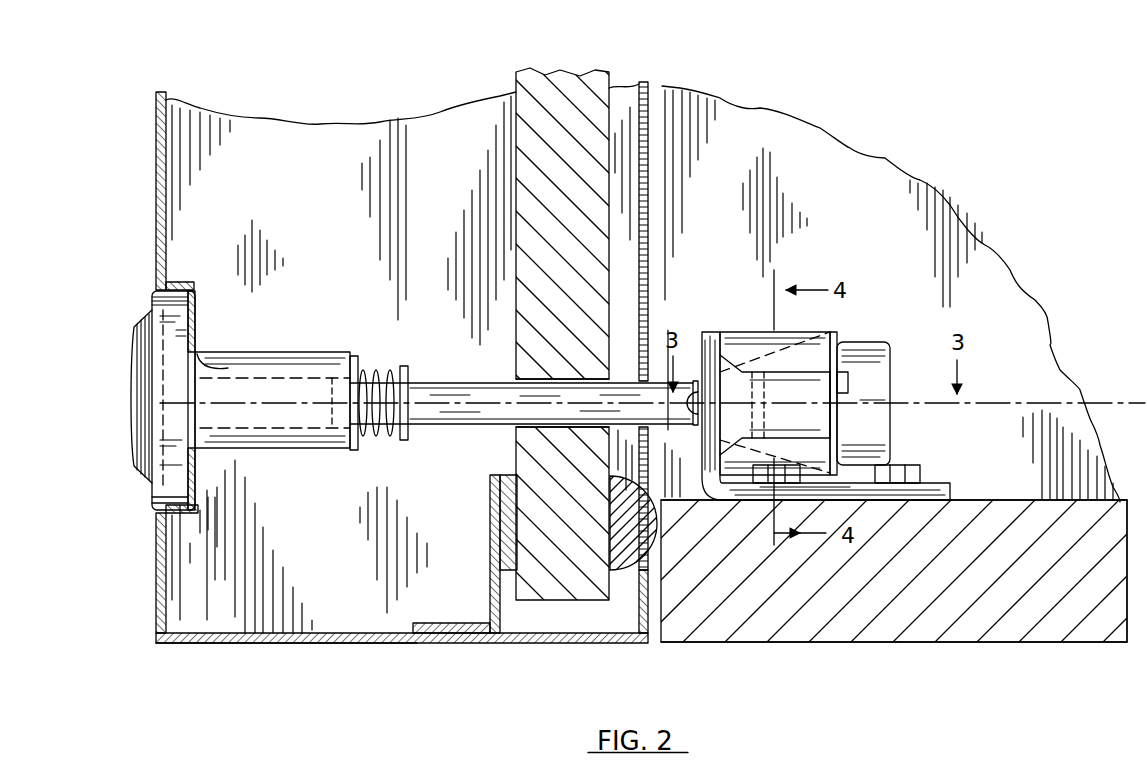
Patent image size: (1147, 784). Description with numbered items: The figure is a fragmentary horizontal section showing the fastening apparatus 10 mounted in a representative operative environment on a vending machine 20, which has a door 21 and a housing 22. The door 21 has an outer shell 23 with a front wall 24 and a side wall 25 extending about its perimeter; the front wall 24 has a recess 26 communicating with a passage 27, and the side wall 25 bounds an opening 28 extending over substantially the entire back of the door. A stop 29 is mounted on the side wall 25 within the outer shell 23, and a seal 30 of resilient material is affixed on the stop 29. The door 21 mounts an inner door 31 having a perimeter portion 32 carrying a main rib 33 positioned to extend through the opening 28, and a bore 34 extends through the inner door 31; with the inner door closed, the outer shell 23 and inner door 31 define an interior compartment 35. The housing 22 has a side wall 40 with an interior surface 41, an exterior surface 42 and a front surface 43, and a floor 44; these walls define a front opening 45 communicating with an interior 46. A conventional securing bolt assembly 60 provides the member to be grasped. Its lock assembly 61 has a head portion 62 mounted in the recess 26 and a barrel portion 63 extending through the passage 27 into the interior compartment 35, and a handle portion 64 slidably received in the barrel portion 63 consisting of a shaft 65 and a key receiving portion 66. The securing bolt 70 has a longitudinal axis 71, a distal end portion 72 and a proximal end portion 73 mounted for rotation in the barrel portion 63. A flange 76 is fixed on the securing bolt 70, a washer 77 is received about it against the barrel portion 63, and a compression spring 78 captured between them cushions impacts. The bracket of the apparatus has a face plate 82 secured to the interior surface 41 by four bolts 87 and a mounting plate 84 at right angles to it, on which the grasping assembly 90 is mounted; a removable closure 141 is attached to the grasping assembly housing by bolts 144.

The fastening apparatus 10 is at (831, 375).
The vending machine 20 is at (402, 394).
The door 21 is at (262, 643).
The housing 22 is at (844, 643).
The outer shell 23 is at (156, 590).
The front wall 24 is at (156, 236).
The side wall 25 is at (358, 643).
The recess 26 is at (152, 493).
The passage 27 is at (224, 363).
The opening 28 is at (648, 193).
The stop 29 is at (492, 585).
The seal 30 is at (500, 498).
The inner door 31 is at (573, 349).
The perimeter portion 32 is at (575, 575).
The main rib 33 is at (622, 570).
The bore 34 is at (542, 385).
The interior compartment 35 is at (290, 160).
The side wall 40 is at (827, 570).
The interior surface 41 is at (970, 500).
The exterior surface 42 is at (1020, 643).
The front surface 43 is at (660, 622).
The floor 44 is at (797, 155).
The front opening 45 is at (655, 135).
The interior 46 is at (946, 232).
The securing bolt assembly 60 is at (282, 380).
The lock assembly 61 is at (206, 369).
The head portion 62 is at (174, 300).
The barrel portion 63 is at (282, 430).
The handle portion 64 is at (98, 396).
The shaft 65 is at (267, 362).
The key receiving portion 66 is at (133, 398).
The securing bolt 70 is at (524, 424).
The longitudinal axis 71 is at (480, 405).
The distal end portion 72 is at (679, 410).
The proximal end portion 73 is at (326, 443).
The flange 76 is at (406, 437).
The washer 77 is at (355, 440).
The compression spring 78 is at (379, 432).
The face plate 82 is at (838, 391).
The mounting plate 84 is at (716, 335).
The bolts 87 is at (783, 466).
The grasping assembly 90 is at (850, 330).
The removable closure 141 is at (868, 346).
The bolts 144 is at (850, 382).